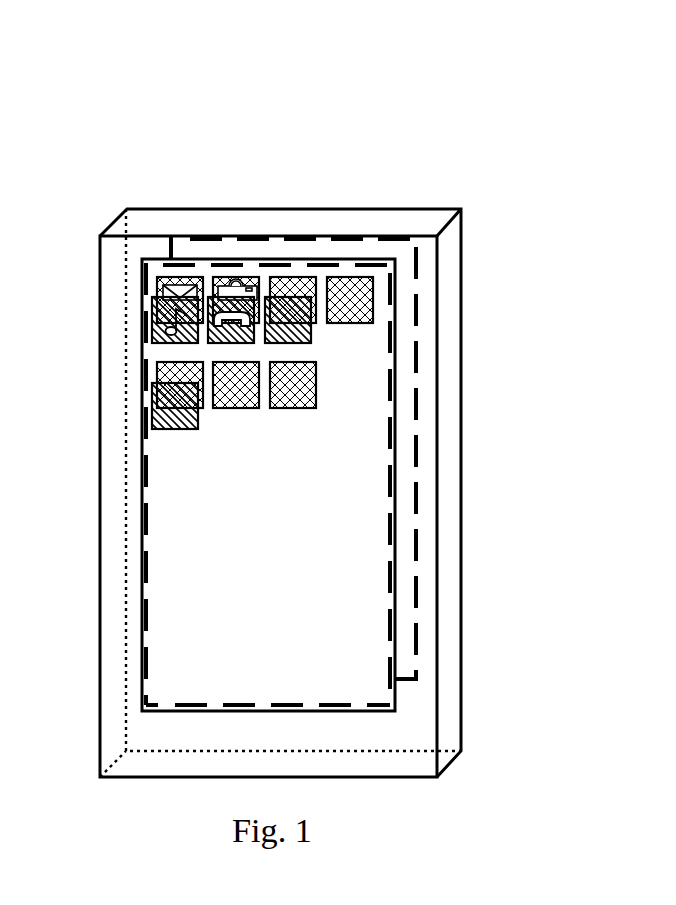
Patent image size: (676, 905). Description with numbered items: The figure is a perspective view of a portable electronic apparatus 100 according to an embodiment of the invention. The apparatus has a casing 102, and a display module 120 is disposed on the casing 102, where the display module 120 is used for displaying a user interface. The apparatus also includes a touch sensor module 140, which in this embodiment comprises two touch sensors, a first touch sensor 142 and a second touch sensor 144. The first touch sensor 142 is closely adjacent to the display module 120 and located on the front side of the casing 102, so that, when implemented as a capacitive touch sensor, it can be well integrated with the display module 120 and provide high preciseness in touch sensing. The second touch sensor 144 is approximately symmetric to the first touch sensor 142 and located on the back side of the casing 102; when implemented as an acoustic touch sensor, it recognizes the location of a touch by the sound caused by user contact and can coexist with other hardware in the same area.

The portable electronic apparatus 100 is at (178, 113).
The casing 102 is at (112, 222).
The display module 120 is at (396, 690).
The touch sensor module 140 is at (580, 532).
The first touch sensor 142 is at (392, 518).
The second touch sensor 144 is at (417, 592).